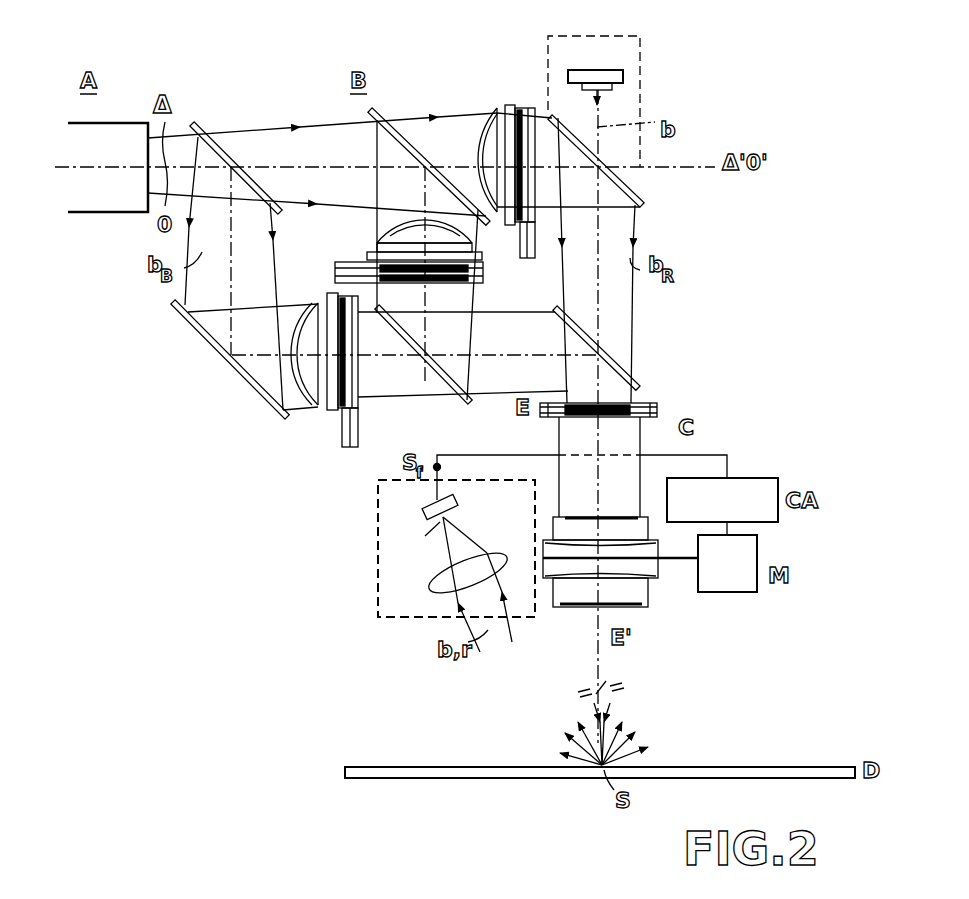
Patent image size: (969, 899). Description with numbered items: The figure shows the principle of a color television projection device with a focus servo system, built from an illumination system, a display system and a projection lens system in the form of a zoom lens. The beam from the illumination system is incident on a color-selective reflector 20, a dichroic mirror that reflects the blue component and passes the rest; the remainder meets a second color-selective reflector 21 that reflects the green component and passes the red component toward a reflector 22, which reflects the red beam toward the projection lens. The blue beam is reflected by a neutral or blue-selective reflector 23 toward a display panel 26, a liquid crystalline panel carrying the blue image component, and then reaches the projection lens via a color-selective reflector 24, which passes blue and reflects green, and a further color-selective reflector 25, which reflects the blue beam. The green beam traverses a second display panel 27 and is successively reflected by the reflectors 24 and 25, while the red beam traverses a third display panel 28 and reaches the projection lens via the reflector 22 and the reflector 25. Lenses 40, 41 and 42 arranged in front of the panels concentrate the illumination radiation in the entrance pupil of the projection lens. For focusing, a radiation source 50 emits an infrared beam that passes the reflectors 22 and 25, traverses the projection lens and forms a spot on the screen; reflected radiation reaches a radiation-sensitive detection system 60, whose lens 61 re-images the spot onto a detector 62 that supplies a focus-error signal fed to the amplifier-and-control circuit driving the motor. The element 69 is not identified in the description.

The color-selective reflector 20 is at (206, 136).
The second color-selective reflector 21 is at (386, 126).
The reflector 22 is at (630, 193).
The neutral or blue-selective reflector 23 is at (240, 376).
The color-selective reflector 24 is at (455, 395).
The further color-selective reflector 25 is at (618, 360).
The display panel 26 is at (364, 370).
The second display panel 27 is at (432, 276).
The third display panel 28 is at (523, 164).
The lens 40 is at (312, 385).
The lens 41 is at (400, 232).
The lens 42 is at (492, 150).
The radiation source 50 is at (612, 88).
The radiation-sensitive detection system 60 is at (435, 548).
The lens 61 is at (430, 585).
The detector 62 is at (428, 507).
The lens element 69 is at (385, 219).